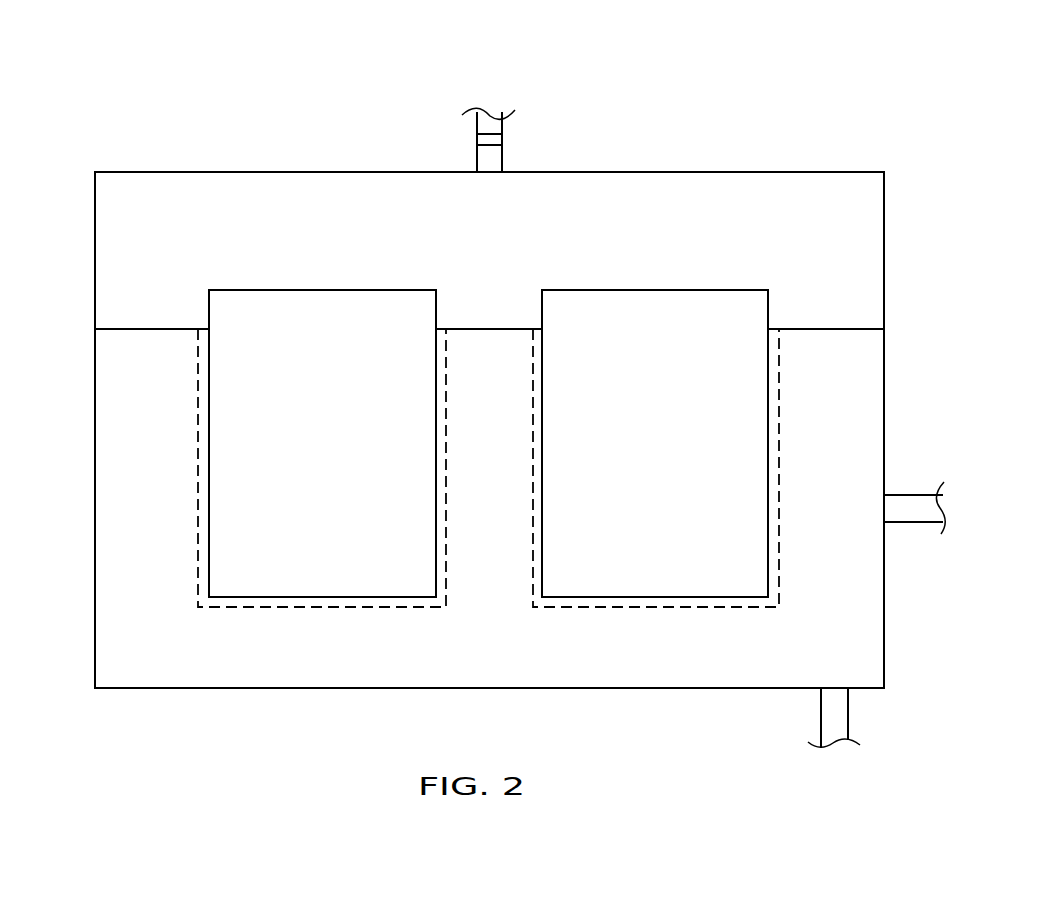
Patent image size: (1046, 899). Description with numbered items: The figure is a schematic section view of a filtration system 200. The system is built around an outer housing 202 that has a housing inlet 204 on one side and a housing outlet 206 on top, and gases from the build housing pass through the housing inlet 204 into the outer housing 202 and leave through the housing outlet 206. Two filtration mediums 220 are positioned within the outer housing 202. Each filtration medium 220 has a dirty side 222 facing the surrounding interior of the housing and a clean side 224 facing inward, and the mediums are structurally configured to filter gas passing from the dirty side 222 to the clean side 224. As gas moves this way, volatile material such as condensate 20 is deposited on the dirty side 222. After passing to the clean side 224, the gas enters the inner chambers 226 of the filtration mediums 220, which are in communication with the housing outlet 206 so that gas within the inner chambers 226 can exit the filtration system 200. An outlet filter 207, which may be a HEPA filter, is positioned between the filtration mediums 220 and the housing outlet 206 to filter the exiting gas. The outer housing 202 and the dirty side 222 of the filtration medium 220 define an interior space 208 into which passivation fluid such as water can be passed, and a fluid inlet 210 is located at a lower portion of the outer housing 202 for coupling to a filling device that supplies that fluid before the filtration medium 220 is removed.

The filtration system 200 is at (140, 100).
The outer housing 202 is at (90, 362).
The housing inlet 204 is at (905, 487).
The housing outlet 206 is at (458, 110).
The outlet filter 207 is at (503, 138).
The interior space 208 is at (165, 660).
The fluid inlet 210 is at (837, 755).
The condensate 20 is at (491, 436).
The filtration medium 220 is at (207, 360).
The dirty side 222 is at (195, 502).
The clean side 224 is at (213, 542).
The inner chamber 226 is at (346, 415).